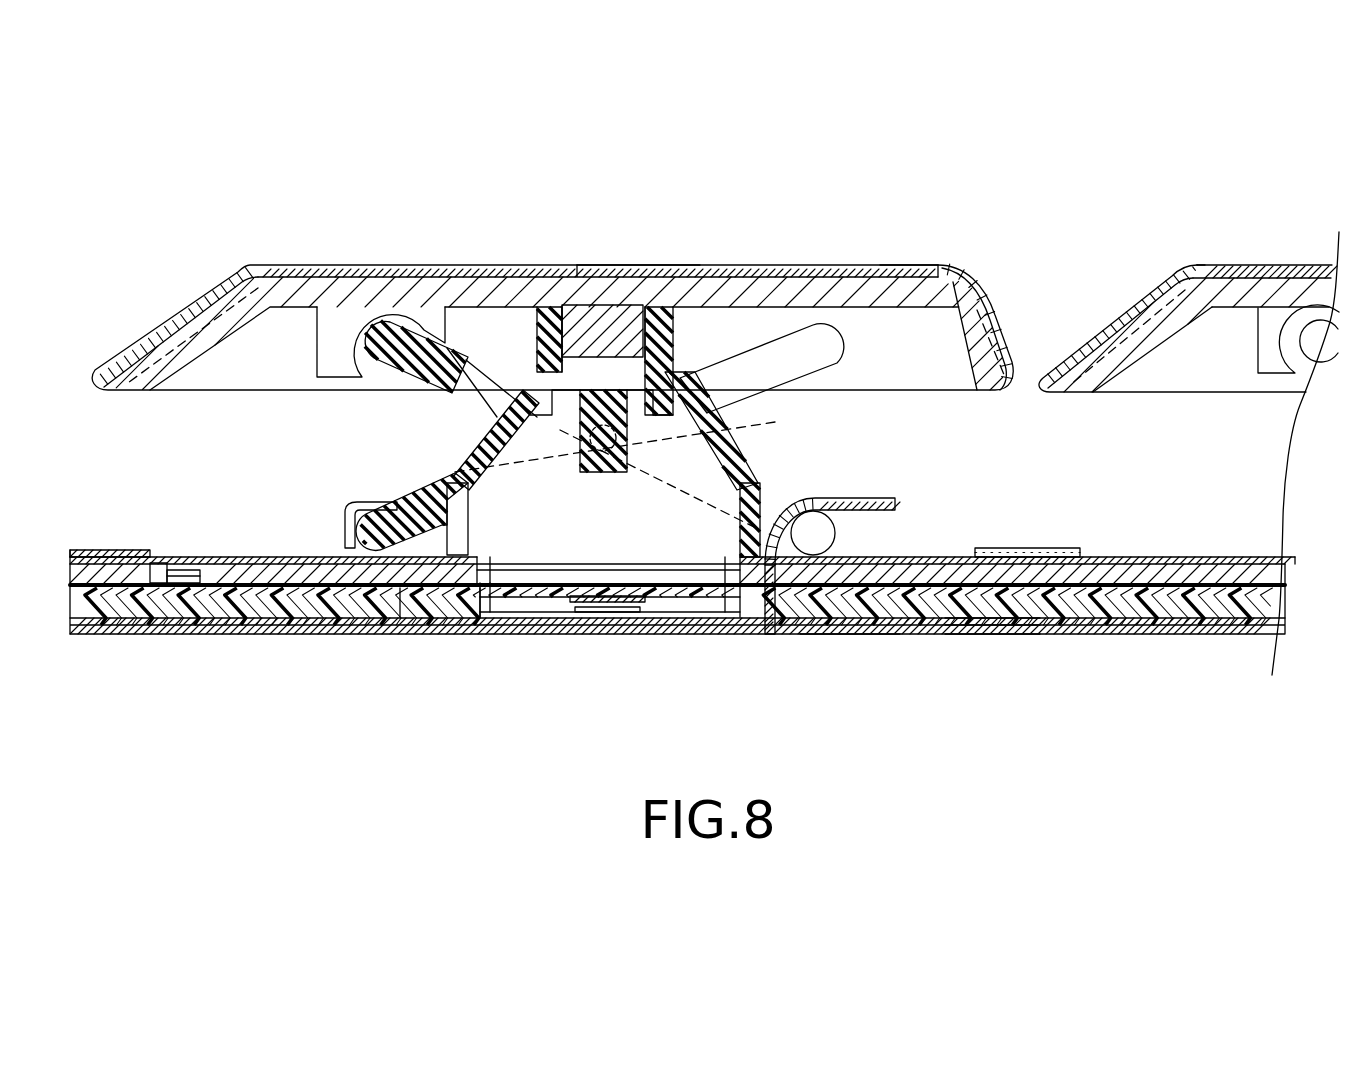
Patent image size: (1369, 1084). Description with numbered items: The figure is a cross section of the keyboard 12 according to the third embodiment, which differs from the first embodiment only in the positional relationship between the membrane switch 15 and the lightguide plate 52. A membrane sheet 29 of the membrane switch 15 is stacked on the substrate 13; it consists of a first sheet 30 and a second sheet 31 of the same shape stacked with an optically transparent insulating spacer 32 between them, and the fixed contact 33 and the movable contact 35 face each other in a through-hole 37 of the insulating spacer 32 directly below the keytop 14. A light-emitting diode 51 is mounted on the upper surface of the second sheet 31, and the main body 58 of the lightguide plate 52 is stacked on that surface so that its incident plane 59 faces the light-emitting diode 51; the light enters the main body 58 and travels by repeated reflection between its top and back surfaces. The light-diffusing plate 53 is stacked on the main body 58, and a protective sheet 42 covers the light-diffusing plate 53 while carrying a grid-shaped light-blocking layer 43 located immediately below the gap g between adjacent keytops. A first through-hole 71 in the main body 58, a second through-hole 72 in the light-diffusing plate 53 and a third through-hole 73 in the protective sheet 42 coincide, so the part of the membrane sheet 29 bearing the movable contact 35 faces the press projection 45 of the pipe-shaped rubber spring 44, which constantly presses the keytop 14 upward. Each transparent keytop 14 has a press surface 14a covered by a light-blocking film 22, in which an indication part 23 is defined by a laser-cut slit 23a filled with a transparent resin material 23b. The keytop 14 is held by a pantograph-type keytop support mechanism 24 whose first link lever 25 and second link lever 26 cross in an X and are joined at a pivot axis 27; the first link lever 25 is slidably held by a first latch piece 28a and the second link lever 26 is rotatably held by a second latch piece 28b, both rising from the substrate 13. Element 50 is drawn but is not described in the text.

The keyboard 12 is at (1256, 188).
The substrate 13 is at (563, 625).
The keytop 14 is at (445, 265).
The press surface 14a is at (548, 268).
The membrane switch 15 is at (845, 637).
The film 22 is at (262, 263).
The indication part 23 is at (826, 202).
The slit 23a is at (933, 262).
The resin material 23b is at (862, 262).
The keytop support mechanism 24 is at (720, 355).
The first link lever 25 is at (487, 395).
The second link lever 26 is at (435, 482).
The pivot axis 27 is at (715, 428).
The first latch piece 28a is at (896, 505).
The second latch piece 28b is at (352, 500).
The membrane sheet 29 is at (1040, 700).
The first sheet 30 is at (975, 632).
The second sheet 31 is at (1015, 600).
The insulating spacer 32 is at (330, 610).
The fixed contact 33 is at (620, 615).
The movable contact 35 is at (622, 596).
The through-hole 37 is at (765, 600).
The protective sheet 42 is at (1210, 557).
The light-blocking layer 43 is at (1042, 547).
The rubber spring 44 is at (737, 470).
The press projection 45 is at (597, 465).
The stopper 50 is at (200, 564).
The light-emitting diode 51 is at (145, 550).
The lightguide plate 52 is at (310, 568).
The light-diffusing plate 53 is at (245, 557).
The main body 58 is at (418, 597).
The incident plane 59 is at (205, 583).
The first through-hole 71 is at (490, 595).
The second through-hole 72 is at (722, 580).
The third through-hole 73 is at (480, 558).
The gap g is at (1013, 358).